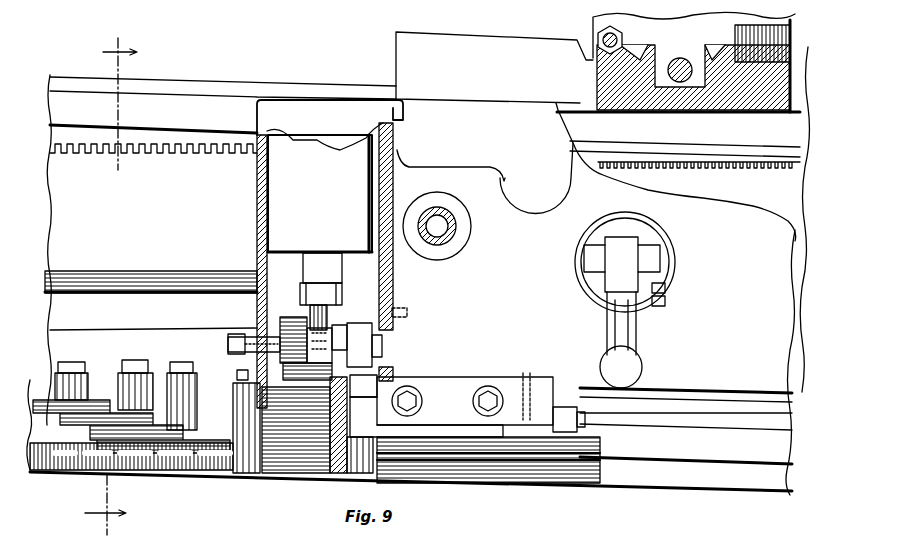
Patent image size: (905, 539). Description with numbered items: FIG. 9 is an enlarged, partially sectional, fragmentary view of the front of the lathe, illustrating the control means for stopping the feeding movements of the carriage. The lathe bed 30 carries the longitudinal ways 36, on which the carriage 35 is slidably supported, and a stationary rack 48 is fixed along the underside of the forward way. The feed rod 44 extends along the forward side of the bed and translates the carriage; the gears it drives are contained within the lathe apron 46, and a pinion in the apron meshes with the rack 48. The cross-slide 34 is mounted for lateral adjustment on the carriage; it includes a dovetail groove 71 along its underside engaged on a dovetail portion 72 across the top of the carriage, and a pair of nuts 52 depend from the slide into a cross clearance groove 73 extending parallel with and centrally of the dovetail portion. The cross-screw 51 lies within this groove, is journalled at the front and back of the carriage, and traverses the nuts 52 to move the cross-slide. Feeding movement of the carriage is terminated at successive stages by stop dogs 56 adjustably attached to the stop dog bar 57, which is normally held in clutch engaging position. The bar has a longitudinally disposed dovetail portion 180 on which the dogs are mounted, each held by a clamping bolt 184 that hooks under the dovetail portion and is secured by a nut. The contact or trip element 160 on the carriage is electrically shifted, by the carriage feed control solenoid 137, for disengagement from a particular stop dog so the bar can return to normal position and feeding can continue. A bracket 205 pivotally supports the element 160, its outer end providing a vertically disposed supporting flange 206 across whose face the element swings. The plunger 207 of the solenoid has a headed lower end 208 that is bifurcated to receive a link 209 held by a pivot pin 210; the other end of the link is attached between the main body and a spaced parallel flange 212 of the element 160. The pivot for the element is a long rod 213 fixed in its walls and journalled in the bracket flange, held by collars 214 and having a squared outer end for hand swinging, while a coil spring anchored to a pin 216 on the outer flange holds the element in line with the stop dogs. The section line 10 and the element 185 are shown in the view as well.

The section line 10 is at (123, 286).
The lathe bed 30 is at (203, 176).
The longitudinal ways 36 is at (191, 87).
The stationary rack 48 is at (153, 170).
The feed rod 44 is at (153, 272).
The carriage 35 is at (386, 62).
The cross-slide 34 is at (584, 22).
The dovetail groove 71 is at (674, 42).
The nuts 52 is at (684, 50).
The dovetail portion 72 is at (598, 72).
The cross clearance groove 73 is at (658, 118).
The cross-screw 51 is at (716, 118).
The carriage feed control solenoid 137 is at (320, 193).
The plunger 207 is at (327, 268).
The headed lower end 208 is at (303, 288).
The link 209 is at (328, 324).
The pin 216 is at (280, 322).
The pivot pin 210 is at (306, 318).
The spaced parallel flange 212 is at (358, 338).
The collars 214 is at (353, 354).
The long rod 213 is at (230, 347).
The bracket 205 is at (369, 378).
The supporting flange 206 is at (340, 480).
The contact or trip element 160 is at (338, 458).
The stop dog bar 57 is at (530, 480).
The dovetail portion 180 is at (600, 462).
The lathe apron 46 is at (681, 372).
The clamping bolt 184 is at (67, 362).
The stop dogs 56 is at (163, 363).
The base 185 is at (100, 420).